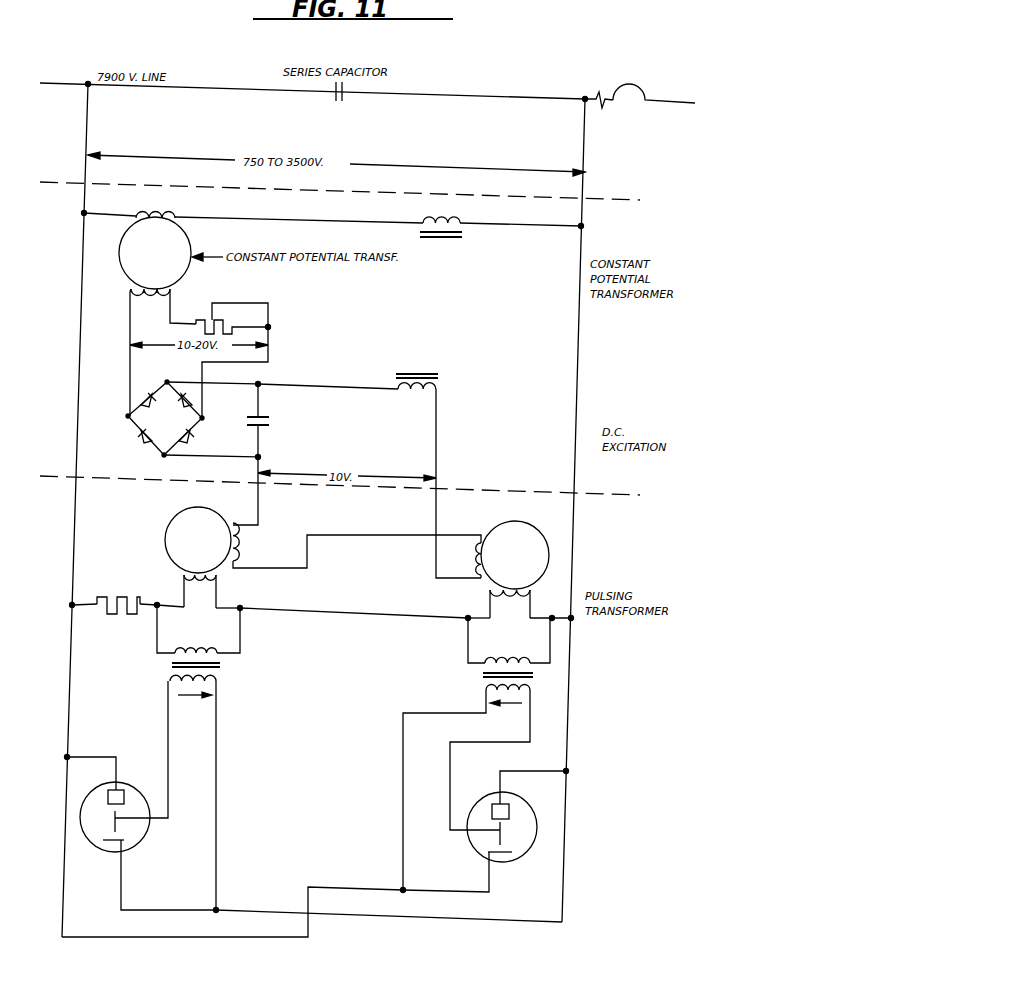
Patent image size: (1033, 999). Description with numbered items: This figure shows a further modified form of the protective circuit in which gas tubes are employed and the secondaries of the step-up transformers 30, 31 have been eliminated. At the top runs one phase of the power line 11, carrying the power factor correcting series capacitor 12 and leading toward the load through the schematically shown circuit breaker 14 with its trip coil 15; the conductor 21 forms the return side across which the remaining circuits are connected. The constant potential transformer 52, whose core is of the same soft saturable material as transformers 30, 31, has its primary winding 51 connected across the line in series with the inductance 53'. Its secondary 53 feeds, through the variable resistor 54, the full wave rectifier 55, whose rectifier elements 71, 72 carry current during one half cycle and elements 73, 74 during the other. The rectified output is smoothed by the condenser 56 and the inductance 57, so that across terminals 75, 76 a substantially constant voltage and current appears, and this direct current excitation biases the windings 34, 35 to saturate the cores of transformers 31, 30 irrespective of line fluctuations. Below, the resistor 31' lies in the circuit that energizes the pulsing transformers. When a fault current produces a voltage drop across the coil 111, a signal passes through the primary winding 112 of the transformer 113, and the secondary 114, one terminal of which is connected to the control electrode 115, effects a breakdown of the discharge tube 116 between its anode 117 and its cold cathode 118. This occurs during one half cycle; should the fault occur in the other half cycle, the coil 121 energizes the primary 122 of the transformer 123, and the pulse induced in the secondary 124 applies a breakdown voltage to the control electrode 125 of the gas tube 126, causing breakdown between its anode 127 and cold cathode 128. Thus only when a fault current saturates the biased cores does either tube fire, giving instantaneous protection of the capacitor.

The power line 11 is at (65, 83).
The series capacitor 12 is at (343, 98).
The circuit breaker 14 is at (642, 88).
The trip coil 15 is at (597, 95).
The conductor 21 is at (579, 396).
The primary winding 51 is at (160, 217).
The transformer 52 is at (133, 272).
The secondary 53 is at (190, 349).
The inductance 53' is at (502, 219).
The variable resistor 54 is at (232, 325).
The full wave rectifier 55 is at (134, 424).
The smoothing condenser 56 is at (270, 417).
The inductance 57 is at (438, 393).
The rectifier element 71 is at (148, 395).
The rectifier element 72 is at (188, 440).
The rectifier element 73 is at (143, 441).
The rectifier element 74 is at (190, 398).
The output terminal 75 is at (261, 471).
The output terminal 76 is at (436, 438).
The step-up transformer 30 is at (540, 568).
The step-up transformer 31 is at (185, 540).
The resistor 31' is at (115, 616).
The auxiliary biasing winding 34 is at (238, 537).
The auxiliary biasing winding 35 is at (478, 548).
The coil 111 is at (203, 582).
The primary winding 112 is at (222, 641).
The transformer 113 is at (222, 665).
The secondary 114 is at (218, 688).
The control electrode 115 is at (120, 827).
The discharge tube 116 is at (141, 801).
The anode 117 is at (108, 792).
The cold cathode 118 is at (108, 843).
The coil 121 is at (516, 597).
The primary 122 is at (500, 658).
The transformer 123 is at (482, 674).
The secondary 124 is at (486, 690).
The control electrode 125 is at (503, 838).
The gas tube 126 is at (473, 836).
The anode 127 is at (511, 811).
The cold cathode 128 is at (492, 866).